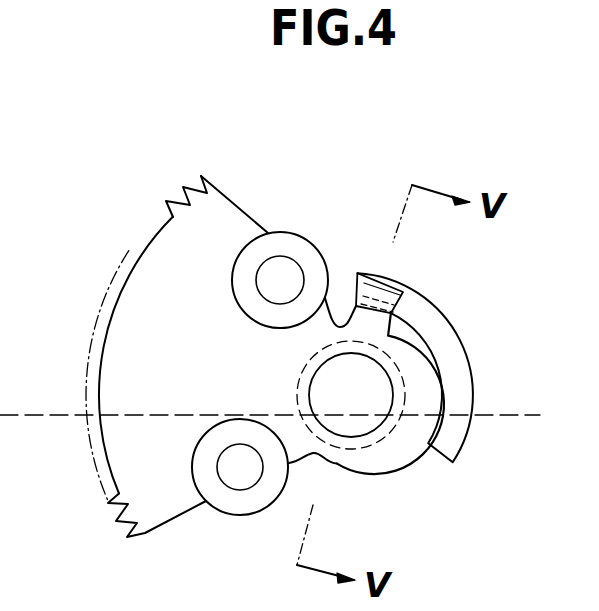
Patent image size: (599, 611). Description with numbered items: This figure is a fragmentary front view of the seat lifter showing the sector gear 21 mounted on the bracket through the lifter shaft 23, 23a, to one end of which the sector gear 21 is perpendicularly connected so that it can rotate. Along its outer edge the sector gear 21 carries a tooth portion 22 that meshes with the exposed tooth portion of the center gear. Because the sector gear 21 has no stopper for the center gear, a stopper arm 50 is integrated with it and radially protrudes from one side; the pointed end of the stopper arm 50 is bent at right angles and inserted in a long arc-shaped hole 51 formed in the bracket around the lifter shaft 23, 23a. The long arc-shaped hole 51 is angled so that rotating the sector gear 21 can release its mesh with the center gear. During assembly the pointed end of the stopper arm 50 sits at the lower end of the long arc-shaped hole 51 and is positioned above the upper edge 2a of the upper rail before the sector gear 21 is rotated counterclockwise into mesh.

The upper edge 2a is at (455, 415).
The sector gear 21 is at (243, 203).
The tooth portion 22 is at (110, 503).
The lifter shaft 23 is at (397, 417).
The lifter shaft 23a is at (360, 425).
The stopper arm 50 is at (384, 294).
The long arc-shaped hole 51 is at (437, 325).